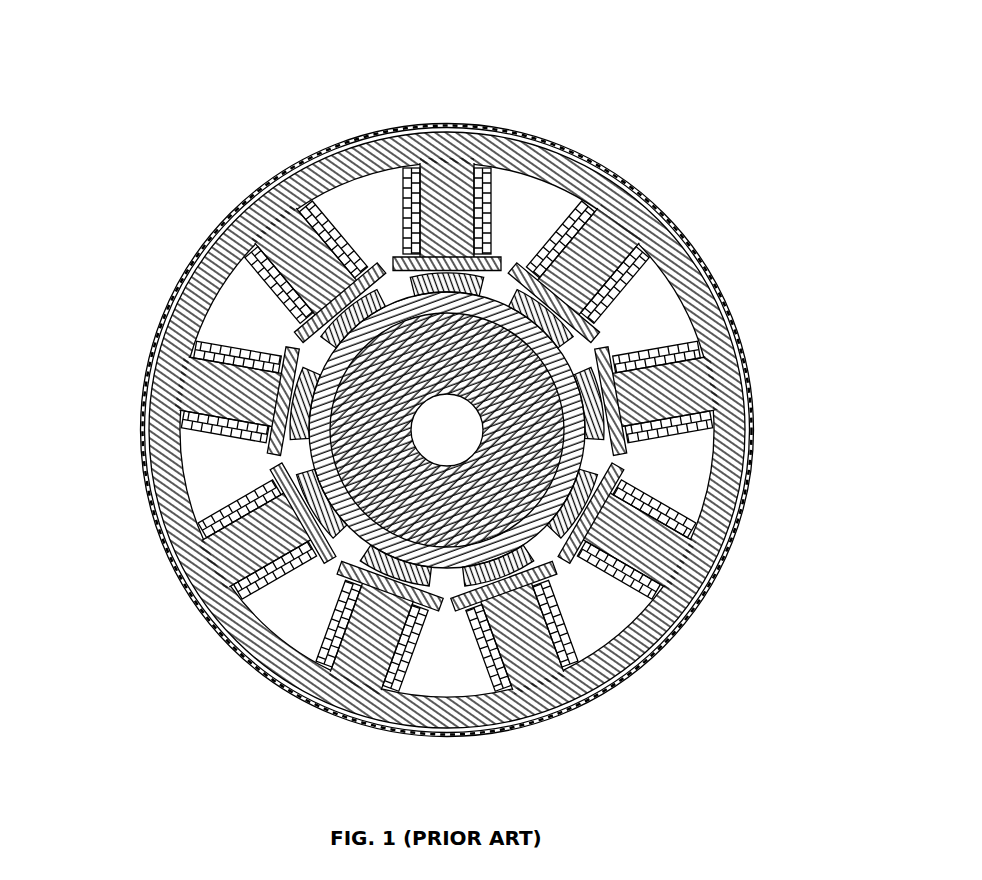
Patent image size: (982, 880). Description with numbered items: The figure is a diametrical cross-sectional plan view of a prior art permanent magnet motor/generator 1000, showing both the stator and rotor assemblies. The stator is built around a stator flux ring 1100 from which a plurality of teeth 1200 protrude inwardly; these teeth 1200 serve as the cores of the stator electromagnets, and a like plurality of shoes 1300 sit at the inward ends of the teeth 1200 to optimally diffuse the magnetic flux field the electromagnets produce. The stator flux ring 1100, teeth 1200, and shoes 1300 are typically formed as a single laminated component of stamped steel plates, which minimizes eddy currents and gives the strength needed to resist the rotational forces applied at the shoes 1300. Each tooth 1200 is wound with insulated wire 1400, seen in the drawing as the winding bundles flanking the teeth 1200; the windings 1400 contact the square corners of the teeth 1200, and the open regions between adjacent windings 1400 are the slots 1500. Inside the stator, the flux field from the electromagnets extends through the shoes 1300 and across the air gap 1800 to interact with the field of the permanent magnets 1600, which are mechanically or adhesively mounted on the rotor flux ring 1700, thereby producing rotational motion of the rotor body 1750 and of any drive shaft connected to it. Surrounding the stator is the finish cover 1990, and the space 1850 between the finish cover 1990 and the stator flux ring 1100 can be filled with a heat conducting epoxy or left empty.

The motor/generator 1000 is at (482, 33).
The stator flux ring 1100 is at (540, 165).
The teeth 1200 is at (605, 240).
The shoes 1300 is at (593, 333).
The insulated wire 1400 is at (680, 353).
The slot 1500 is at (685, 458).
The permanent magnets 1600 is at (628, 527).
The rotor flux ring 1700 is at (608, 663).
The rotor body 1750 is at (345, 548).
The air gap 1800 is at (270, 350).
The space 1850 is at (145, 478).
The finish cover 1990 is at (150, 362).